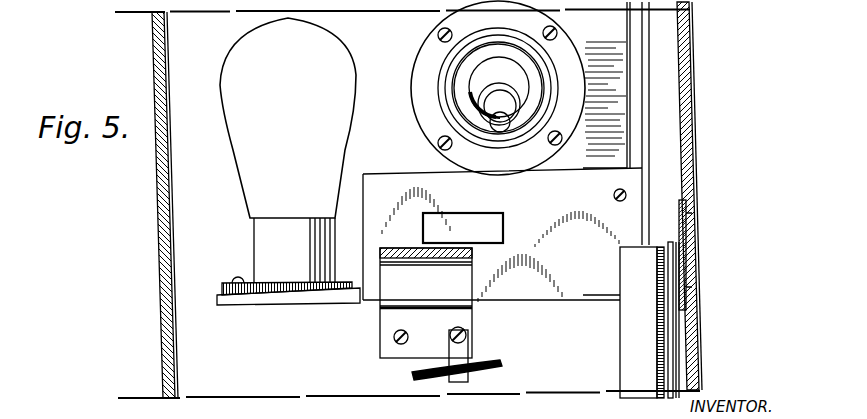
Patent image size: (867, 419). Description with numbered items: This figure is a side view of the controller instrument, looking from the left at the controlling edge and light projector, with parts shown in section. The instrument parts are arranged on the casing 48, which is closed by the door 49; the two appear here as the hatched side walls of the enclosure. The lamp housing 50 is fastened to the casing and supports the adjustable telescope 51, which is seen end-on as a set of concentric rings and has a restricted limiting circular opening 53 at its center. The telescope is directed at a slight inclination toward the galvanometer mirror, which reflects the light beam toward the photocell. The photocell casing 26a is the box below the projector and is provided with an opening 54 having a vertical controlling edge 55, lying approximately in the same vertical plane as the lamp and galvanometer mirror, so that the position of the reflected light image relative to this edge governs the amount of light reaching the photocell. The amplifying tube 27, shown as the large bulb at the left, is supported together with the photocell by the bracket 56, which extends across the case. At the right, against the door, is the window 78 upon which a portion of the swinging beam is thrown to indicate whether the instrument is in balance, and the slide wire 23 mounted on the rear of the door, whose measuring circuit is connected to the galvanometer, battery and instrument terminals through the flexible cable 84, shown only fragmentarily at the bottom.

The slide wire 23 is at (657, 323).
The photocell casing 26a is at (552, 278).
The amplifying tube 27 is at (242, 115).
The casing 48 is at (160, 290).
The door 49 is at (692, 87).
The lamp housing 50 is at (455, 63).
The telescope 51 is at (476, 96).
The limiting circular opening 53 is at (488, 122).
The opening 54 is at (470, 222).
The controlling edge 55 is at (505, 227).
The bracket 56 is at (400, 280).
The window 78 is at (690, 216).
The flexible cable 84 is at (436, 382).